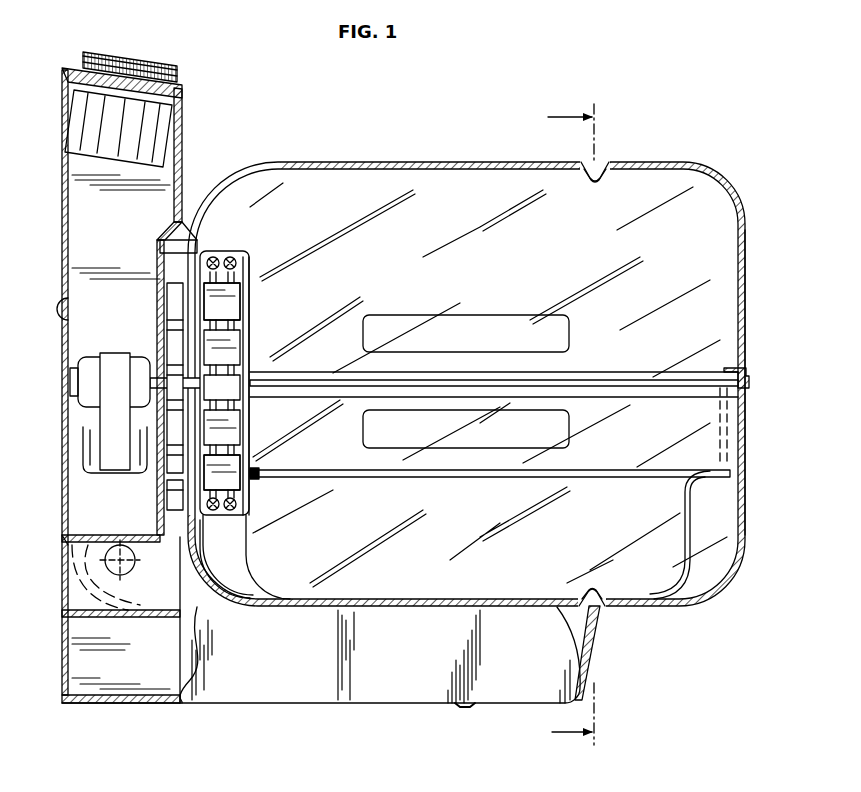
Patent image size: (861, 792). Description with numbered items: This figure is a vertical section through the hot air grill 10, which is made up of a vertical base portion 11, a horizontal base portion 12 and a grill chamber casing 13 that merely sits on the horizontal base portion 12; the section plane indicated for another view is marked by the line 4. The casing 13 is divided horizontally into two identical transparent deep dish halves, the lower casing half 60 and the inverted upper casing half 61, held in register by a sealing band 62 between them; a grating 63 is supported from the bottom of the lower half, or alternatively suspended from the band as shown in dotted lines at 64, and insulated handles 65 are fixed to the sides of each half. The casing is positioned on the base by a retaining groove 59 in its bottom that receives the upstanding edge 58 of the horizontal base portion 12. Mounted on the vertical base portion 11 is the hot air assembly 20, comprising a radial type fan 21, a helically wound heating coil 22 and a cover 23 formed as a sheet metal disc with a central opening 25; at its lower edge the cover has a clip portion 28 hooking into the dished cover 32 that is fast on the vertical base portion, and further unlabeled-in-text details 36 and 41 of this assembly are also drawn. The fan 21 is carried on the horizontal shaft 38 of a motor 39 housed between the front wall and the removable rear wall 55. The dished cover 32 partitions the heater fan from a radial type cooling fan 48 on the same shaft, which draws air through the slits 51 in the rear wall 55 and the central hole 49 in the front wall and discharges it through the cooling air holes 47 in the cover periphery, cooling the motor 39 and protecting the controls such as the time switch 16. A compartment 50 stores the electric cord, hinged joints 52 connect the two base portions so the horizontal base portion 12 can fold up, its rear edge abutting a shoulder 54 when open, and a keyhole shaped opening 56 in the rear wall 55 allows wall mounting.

The hot air grill 10 is at (525, 88).
The vertical base portion 11 is at (183, 128).
The horizontal base portion 12 is at (581, 697).
The grill chamber casing 13 is at (683, 163).
The time switch 16 is at (150, 65).
The hot air assembly 20 is at (233, 251).
The radial type fan 21 is at (215, 310).
The helically wound heating coil 22 is at (213, 257).
The cover 23 is at (250, 257).
The central opening 25 is at (250, 338).
The clip portion 28 is at (243, 527).
The dished cover 32 is at (203, 522).
The lower block 36 is at (226, 465).
The horizontal shaft 38 is at (168, 372).
The motor 39 is at (90, 370).
The shaft 41 is at (238, 382).
The cooling air holes 47 is at (160, 270).
The radial type cooling fan 48 is at (176, 495).
The central hole 49 is at (150, 440).
The compartment 50 is at (175, 578).
The slits 51 is at (78, 460).
The hinged joints 52 is at (136, 561).
The shoulder 54 is at (66, 540).
The rear wall 55 is at (60, 312).
The keyhole shaped opening 56 is at (70, 220).
The upstanding edge 58 is at (592, 620).
The retaining groove 59 is at (592, 183).
The lower casing half 60 is at (738, 535).
The upper casing half 61 is at (742, 268).
The sealing band 62 is at (738, 376).
The grating 63 is at (600, 470).
The suspended grating position 64 is at (724, 428).
The insulated handles 65 is at (563, 322).
The section line 4- 4 is at (571, 434).